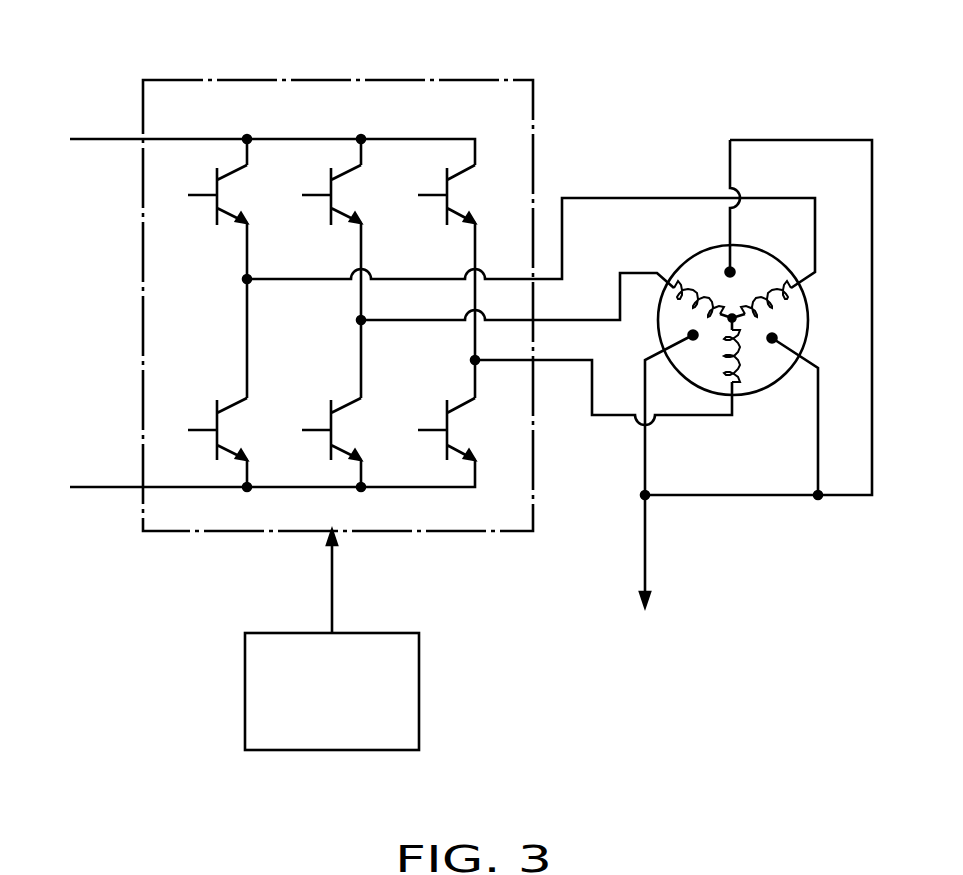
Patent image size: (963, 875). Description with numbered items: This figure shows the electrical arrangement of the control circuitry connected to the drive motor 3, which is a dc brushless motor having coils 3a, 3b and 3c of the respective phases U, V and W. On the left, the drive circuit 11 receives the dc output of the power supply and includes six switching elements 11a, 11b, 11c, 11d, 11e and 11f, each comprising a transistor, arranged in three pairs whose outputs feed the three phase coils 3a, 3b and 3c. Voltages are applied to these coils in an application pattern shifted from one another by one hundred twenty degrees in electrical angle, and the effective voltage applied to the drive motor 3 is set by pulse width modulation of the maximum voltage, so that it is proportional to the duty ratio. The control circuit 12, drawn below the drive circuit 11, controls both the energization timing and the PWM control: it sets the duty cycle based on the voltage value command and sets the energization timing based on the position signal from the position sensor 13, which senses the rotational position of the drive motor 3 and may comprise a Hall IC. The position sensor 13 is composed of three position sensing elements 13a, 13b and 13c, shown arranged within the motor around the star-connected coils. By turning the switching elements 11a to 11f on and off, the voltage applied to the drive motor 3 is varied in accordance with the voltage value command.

The drive motor 3 is at (771, 340).
The coil 3a is at (775, 297).
The coil 3b is at (745, 352).
The coil 3c is at (688, 272).
The drive circuit 11 is at (323, 80).
The switching element 11a is at (210, 206).
The switching element 11b is at (325, 206).
The switching element 11c is at (441, 206).
The switching element 11d is at (211, 420).
The switching element 11e is at (325, 420).
The switching element 11f is at (440, 420).
The control circuit 12 is at (419, 678).
The position sensor 13 is at (737, 373).
The position sensing element 13a is at (740, 268).
The position sensing element 13b is at (782, 336).
The position sensing element 13c is at (690, 328).